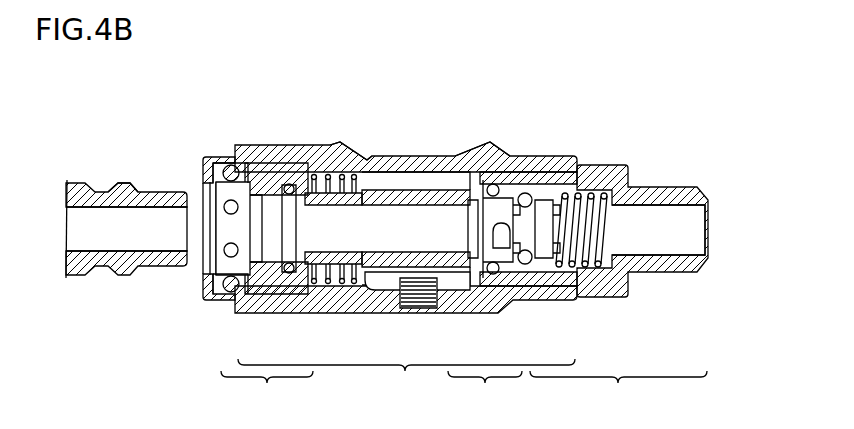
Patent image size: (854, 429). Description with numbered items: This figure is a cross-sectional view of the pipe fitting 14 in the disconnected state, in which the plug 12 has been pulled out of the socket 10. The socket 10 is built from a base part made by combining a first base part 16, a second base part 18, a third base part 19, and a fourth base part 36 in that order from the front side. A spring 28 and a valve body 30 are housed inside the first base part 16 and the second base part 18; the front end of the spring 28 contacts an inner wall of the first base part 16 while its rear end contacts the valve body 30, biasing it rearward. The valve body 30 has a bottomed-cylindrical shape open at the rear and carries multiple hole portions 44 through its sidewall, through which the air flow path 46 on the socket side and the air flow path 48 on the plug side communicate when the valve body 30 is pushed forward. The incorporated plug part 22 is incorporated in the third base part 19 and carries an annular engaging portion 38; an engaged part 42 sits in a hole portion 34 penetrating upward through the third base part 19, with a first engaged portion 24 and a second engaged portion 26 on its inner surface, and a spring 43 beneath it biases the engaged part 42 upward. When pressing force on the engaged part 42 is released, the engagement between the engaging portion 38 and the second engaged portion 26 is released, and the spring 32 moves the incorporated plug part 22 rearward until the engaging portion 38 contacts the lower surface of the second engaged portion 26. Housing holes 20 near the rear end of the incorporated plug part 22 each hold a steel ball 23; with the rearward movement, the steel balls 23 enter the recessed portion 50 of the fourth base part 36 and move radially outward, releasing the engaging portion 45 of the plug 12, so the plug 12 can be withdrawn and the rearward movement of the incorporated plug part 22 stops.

The socket 10 is at (642, 198).
The plug 12 is at (126, 189).
The pipe fitting 14 is at (397, 69).
The first base part 16 is at (618, 391).
The second base part 18 is at (485, 391).
The third base part 19 is at (406, 378).
The housing holes 20 is at (243, 200).
The incorporated plug part 22 is at (386, 313).
The steel ball 23 is at (229, 168).
The first engaged portion 24 is at (424, 278).
The second engaged portion 26 is at (383, 182).
The spring 28 is at (563, 300).
The valve body 30 is at (521, 300).
The spring 32 is at (325, 144).
The hole portion 34 is at (367, 158).
The fourth base part 36 is at (267, 391).
The engaging portion 38 is at (392, 190).
The engaged part 42 is at (414, 156).
The spring 43 is at (418, 308).
The hole portion 44 is at (517, 162).
The engaging portion 45 is at (130, 182).
The air flow path 46 is at (658, 230).
The air flow path 48 is at (126, 229).
The recessed portion 50 is at (222, 166).